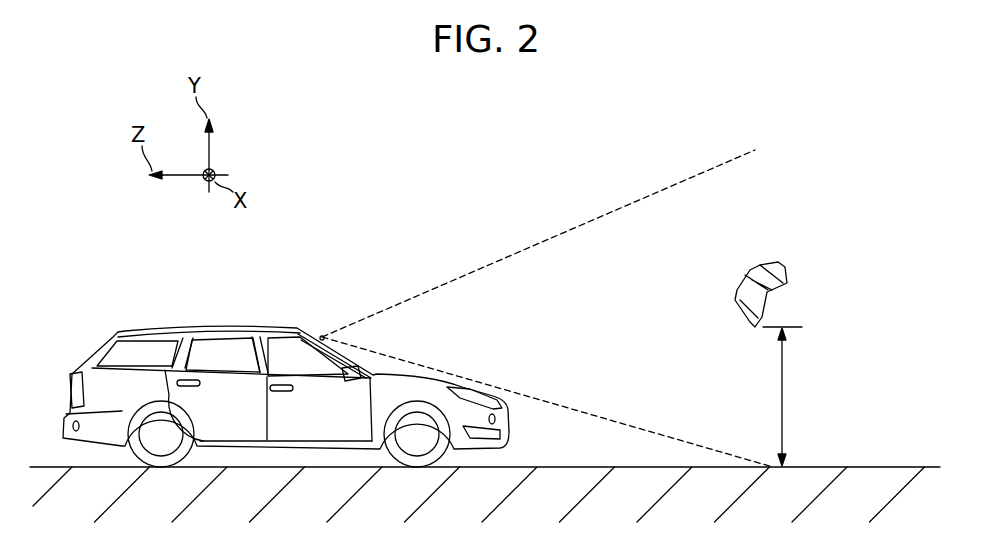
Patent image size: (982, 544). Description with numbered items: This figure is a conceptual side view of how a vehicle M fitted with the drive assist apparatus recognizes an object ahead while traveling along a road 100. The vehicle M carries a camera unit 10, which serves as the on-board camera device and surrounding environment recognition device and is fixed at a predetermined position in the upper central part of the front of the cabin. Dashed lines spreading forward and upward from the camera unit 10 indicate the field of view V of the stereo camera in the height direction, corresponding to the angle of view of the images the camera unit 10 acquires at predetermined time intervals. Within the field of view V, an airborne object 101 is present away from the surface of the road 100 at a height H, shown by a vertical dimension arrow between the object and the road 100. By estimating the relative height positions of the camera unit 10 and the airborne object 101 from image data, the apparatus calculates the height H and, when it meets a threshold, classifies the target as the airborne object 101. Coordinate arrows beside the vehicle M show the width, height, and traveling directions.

The camera unit 10 is at (318, 337).
The road 100 is at (850, 467).
The airborne object 101 is at (775, 262).
The vehicle M is at (203, 327).
The field of view V is at (690, 178).
The height H is at (786, 396).